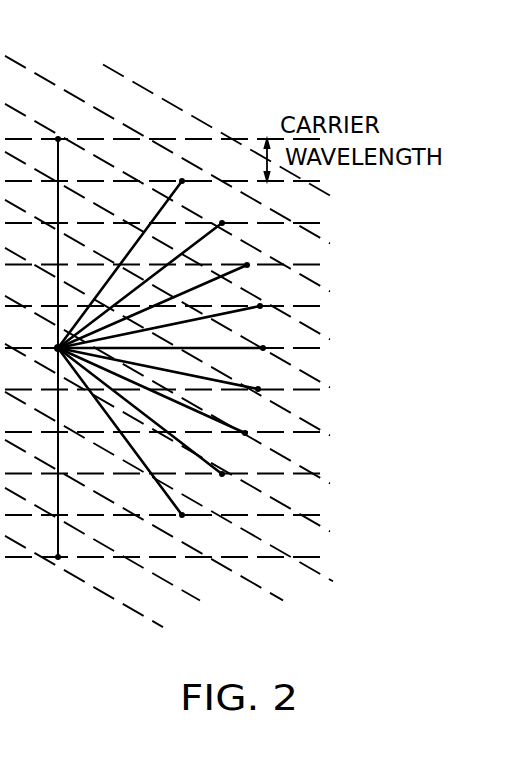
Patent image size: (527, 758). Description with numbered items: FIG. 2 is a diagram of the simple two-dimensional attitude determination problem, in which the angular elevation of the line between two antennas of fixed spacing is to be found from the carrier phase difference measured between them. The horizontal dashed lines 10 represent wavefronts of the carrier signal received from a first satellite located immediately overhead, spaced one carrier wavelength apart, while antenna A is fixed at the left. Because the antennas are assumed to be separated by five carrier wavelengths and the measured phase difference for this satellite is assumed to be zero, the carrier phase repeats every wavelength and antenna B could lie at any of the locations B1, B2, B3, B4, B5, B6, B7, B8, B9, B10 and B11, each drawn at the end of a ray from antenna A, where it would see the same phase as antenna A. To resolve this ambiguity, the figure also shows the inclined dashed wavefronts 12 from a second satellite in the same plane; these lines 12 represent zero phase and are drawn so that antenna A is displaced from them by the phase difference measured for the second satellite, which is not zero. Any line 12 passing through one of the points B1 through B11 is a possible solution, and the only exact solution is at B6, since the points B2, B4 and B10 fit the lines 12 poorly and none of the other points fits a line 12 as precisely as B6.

The wavefronts of first satellite carrier signal 10 is at (325, 348).
The wavefronts from second satellite 12 is at (325, 474).
The antenna A is at (49, 348).
The candidate location of antenna B B1 is at (58, 229).
The candidate location of antenna B B2 is at (121, 251).
The candidate location of antenna B B3 is at (155, 273).
The candidate location of antenna B B4 is at (154, 294).
The candidate location of antenna B B5 is at (177, 312).
The exact solution location of antenna B B6 is at (174, 336).
The candidate location of antenna B B7 is at (170, 370).
The candidate location of antenna B B8 is at (166, 392).
The candidate location of antenna B B9 is at (147, 427).
The candidate location of antenna B B10 is at (140, 445).
The candidate location of antenna B B11 is at (56, 473).